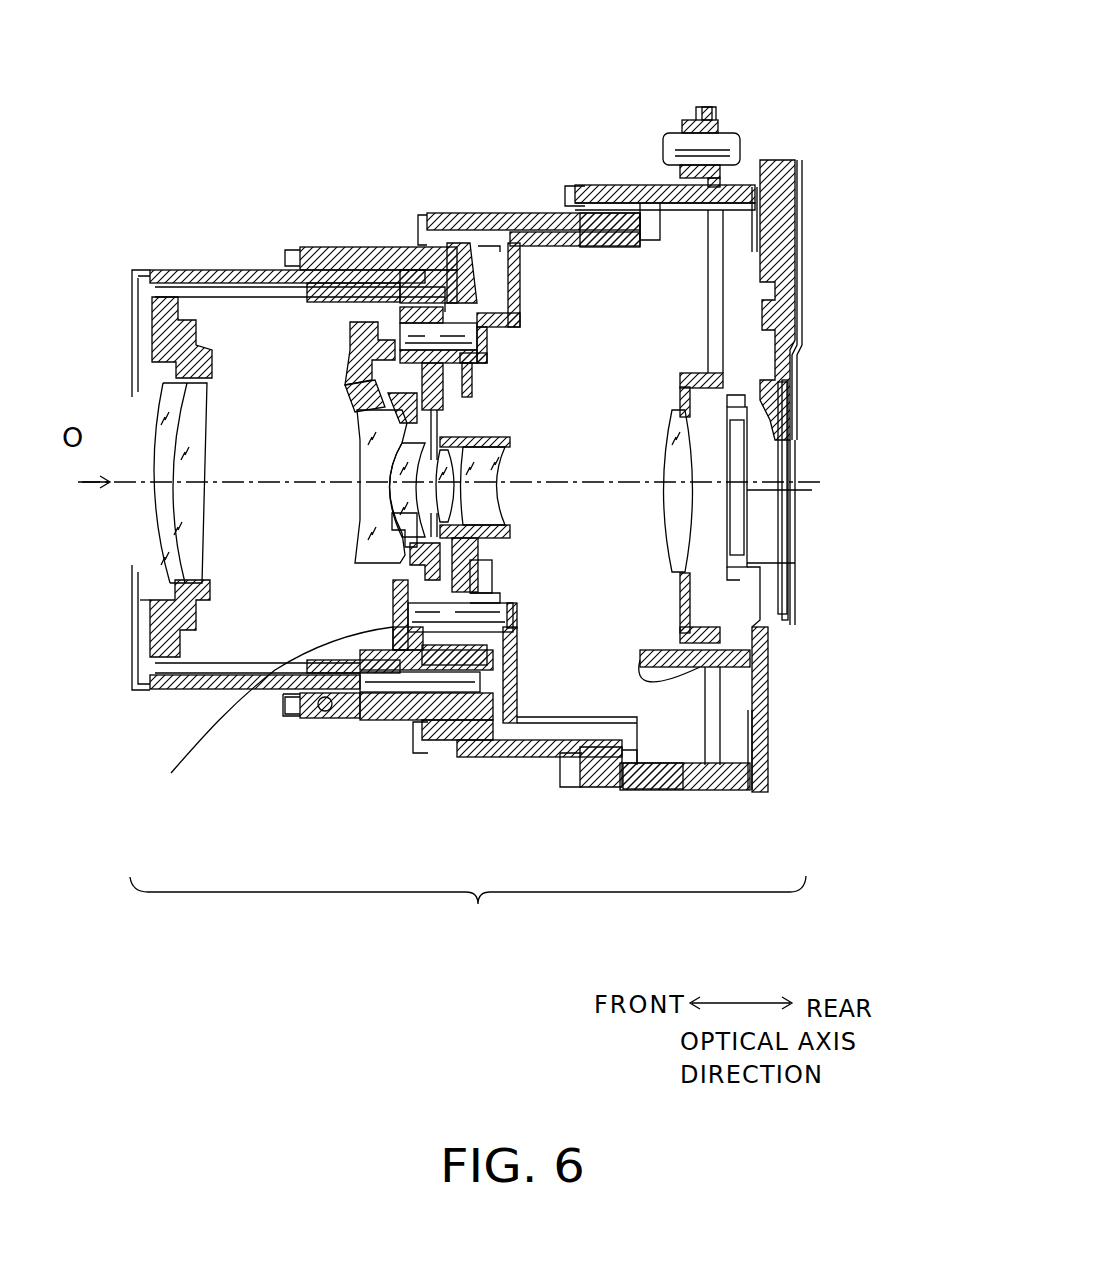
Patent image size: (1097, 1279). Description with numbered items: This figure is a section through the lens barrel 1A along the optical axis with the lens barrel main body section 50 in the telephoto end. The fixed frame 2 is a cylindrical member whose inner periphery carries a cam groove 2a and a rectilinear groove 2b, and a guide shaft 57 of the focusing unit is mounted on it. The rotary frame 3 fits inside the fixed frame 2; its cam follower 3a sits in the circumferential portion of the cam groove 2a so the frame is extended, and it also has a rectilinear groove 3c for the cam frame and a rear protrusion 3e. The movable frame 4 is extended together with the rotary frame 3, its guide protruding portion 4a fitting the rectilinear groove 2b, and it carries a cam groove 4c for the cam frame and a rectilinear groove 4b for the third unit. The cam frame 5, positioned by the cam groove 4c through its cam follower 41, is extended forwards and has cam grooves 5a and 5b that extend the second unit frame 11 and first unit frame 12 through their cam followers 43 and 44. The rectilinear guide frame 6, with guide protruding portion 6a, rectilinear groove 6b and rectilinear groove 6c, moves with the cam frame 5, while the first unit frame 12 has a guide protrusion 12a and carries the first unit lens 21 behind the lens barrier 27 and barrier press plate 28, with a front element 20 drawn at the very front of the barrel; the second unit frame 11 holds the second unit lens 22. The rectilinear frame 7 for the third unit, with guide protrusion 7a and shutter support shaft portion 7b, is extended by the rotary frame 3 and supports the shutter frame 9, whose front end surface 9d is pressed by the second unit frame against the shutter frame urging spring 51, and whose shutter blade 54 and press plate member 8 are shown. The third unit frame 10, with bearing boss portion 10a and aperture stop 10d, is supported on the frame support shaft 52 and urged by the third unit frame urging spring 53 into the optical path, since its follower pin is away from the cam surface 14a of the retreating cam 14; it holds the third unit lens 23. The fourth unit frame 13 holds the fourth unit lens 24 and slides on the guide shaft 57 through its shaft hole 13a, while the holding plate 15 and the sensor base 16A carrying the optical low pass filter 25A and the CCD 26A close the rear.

The lens barrel 1A is at (920, 104).
The fixed frame 2 is at (695, 792).
The cam groove 2a is at (594, 883).
The rectilinear groove 2b is at (650, 489).
The rotary frame 3 is at (460, 232).
The cam follower 3a is at (603, 775).
The rectilinear groove for the cam frame 3c is at (590, 188).
The protrusion 3e is at (740, 233).
The movable frame 4 is at (562, 185).
The guide protruding portion 4a is at (640, 205).
The rectilinear groove for the third unit 4b is at (595, 248).
The cam groove for the cam frame 4c is at (435, 215).
The cam frame 5 is at (310, 250).
The cam groove for the second unit 5a is at (473, 93).
The cam groove for the first unit 5b is at (255, 823).
The rectilinear guide frame 6 is at (350, 290).
The guide protruding portion 6a is at (522, 248).
The rectilinear groove for the second unit 6b is at (380, 290).
The rectilinear groove for the first unit 6c is at (313, 720).
The rectilinear frame for the third unit 7 is at (522, 318).
The guide protrusion 7a is at (478, 742).
The shutter support shaft portion 7b is at (398, 338).
The press plate member 8 is at (271, 716).
The shutter frame 9 is at (410, 310).
The front end surface 9d is at (360, 392).
The third unit frame 10 is at (490, 572).
The bearing boss portion 10a is at (500, 600).
The aperture stop 10d is at (392, 530).
The second unit frame 11 is at (280, 290).
The first unit frame 12 is at (215, 272).
The guide protrusion 12a is at (218, 676).
The fourth unit frame 13 is at (740, 345).
The shaft hole 13a is at (712, 108).
The retreating cam 14 is at (762, 698).
The cam surface 14a is at (755, 668).
The holding plate 15 is at (750, 792).
The sensor base 16A is at (768, 755).
The front cover 20 is at (230, 390).
The first unit lens 21 is at (197, 523).
The second unit lens 22 is at (390, 497).
The third unit lens 23 is at (485, 500).
The fourth unit lens 24 is at (668, 478).
The optical low pass filter 25A is at (740, 515).
The CCD 26A is at (768, 540).
The lens barrier 27 is at (150, 608).
The barrier press plate 28 is at (132, 578).
The cam follower 41 is at (490, 235).
The cam follower 43 is at (478, 230).
The cam follower 44 is at (322, 712).
The lens barrel main body section 50 is at (468, 911).
The shutter frame urging spring 51 is at (474, 380).
The frame support shaft 52 is at (425, 692).
The third unit frame urging spring 53 is at (455, 632).
The shutter blade 54 is at (372, 450).
The guide shaft 57 is at (728, 135).